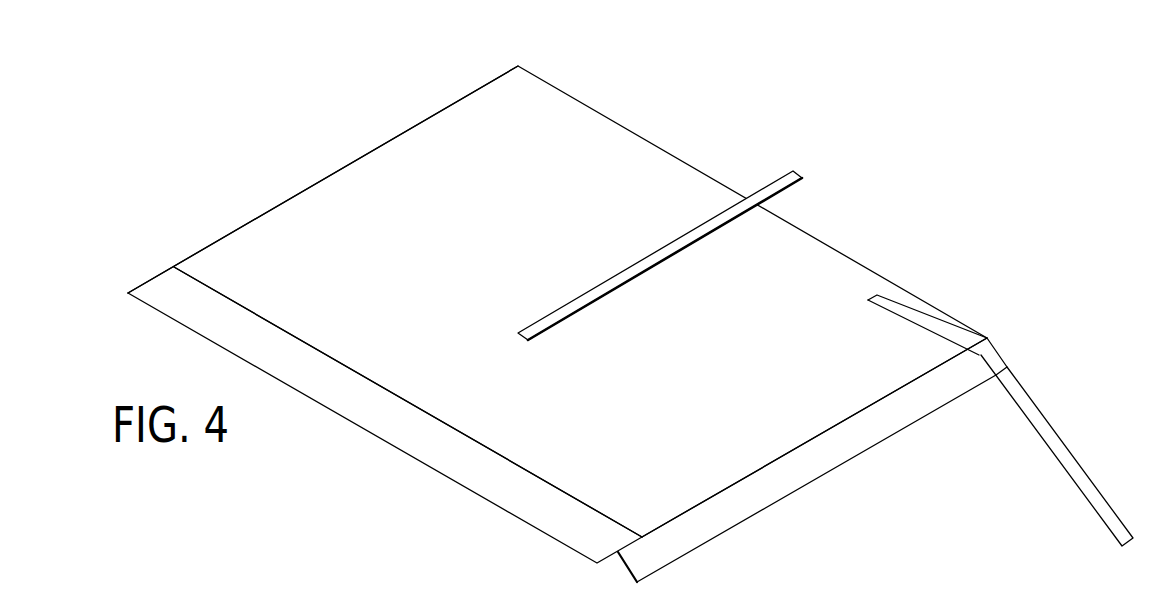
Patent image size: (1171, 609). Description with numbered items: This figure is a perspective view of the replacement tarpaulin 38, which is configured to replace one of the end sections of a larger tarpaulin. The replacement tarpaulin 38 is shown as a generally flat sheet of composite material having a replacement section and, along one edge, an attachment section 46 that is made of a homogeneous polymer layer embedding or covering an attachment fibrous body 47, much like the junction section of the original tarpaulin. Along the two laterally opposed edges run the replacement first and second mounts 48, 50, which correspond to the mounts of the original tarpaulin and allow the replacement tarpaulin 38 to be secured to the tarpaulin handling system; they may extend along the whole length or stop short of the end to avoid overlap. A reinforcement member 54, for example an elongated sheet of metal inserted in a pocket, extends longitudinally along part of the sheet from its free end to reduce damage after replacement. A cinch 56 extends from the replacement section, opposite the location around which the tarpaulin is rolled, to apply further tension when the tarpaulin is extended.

The replacement tarpaulin 38 is at (400, 91).
The attachment section 46 is at (528, 512).
The attachment fibrous body 47 is at (960, 603).
The replacement first mount 48 is at (288, 198).
The replacement second mount 50 is at (813, 478).
The reinforcement member 54 is at (802, 177).
The cinch 56 is at (1087, 485).